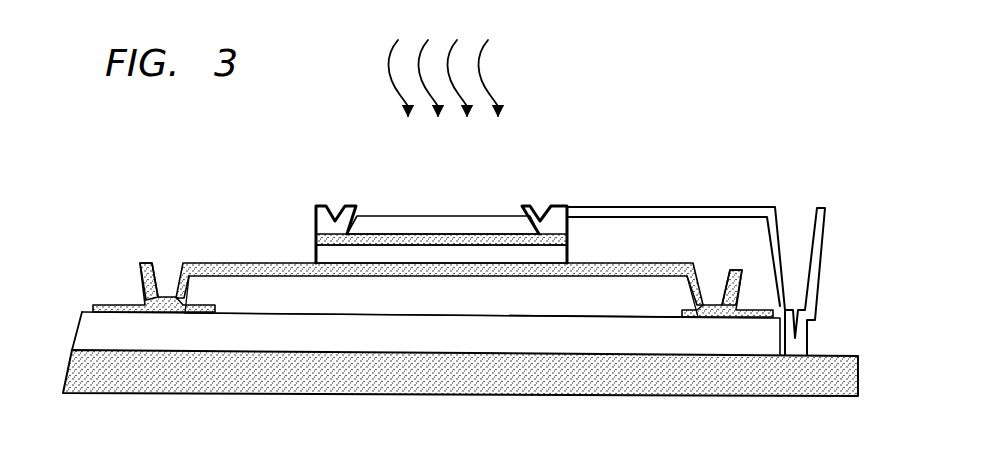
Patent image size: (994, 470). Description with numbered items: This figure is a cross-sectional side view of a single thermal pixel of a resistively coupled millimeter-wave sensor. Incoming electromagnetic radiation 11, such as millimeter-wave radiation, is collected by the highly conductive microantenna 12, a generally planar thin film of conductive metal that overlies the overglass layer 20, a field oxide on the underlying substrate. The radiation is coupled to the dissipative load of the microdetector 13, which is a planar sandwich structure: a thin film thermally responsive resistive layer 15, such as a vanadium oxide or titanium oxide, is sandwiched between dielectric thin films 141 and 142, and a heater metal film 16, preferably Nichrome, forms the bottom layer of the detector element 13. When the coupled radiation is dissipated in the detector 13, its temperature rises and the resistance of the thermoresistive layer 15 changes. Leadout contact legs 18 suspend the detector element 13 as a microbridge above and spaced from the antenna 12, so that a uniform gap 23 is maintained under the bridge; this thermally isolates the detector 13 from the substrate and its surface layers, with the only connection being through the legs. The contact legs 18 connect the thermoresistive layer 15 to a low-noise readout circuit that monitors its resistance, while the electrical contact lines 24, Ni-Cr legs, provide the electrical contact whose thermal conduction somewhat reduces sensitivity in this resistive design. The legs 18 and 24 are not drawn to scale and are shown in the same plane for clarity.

The electromagnetic radiation 11 is at (503, 75).
The antenna 12 is at (113, 305).
The thermal detector element 13 is at (489, 214).
The dielectric thin film 141 is at (370, 226).
The dielectric thin film 142 is at (421, 256).
The thermally responsive resistive layer 15 is at (318, 243).
The heater metal film 16 is at (238, 264).
The leadout contact legs 18 is at (727, 206).
The overglass layer 20 is at (354, 344).
The gap 23 is at (441, 303).
The electrical contact lines 24 is at (176, 270).